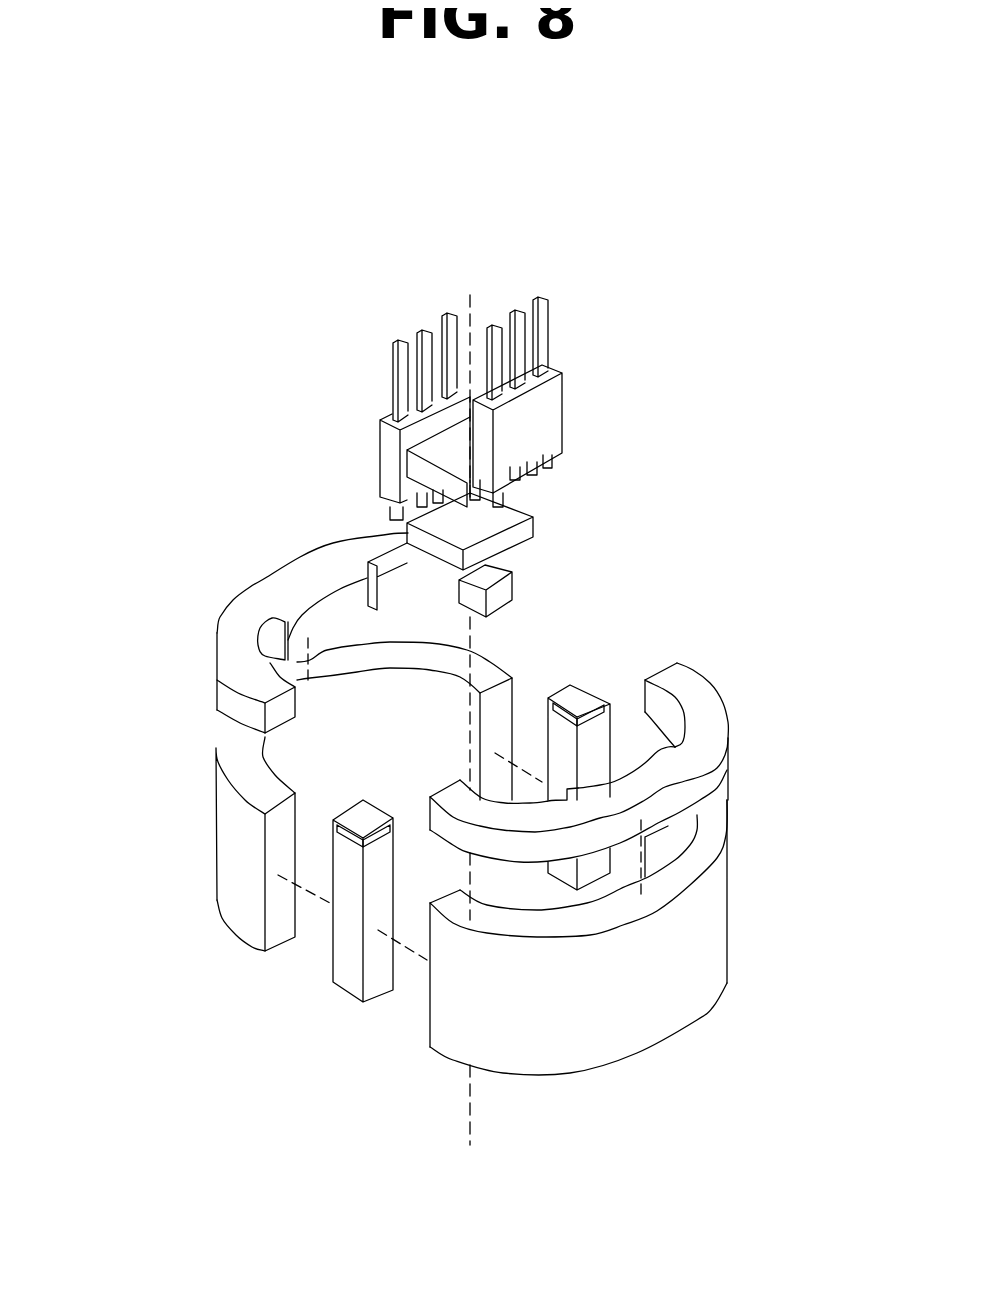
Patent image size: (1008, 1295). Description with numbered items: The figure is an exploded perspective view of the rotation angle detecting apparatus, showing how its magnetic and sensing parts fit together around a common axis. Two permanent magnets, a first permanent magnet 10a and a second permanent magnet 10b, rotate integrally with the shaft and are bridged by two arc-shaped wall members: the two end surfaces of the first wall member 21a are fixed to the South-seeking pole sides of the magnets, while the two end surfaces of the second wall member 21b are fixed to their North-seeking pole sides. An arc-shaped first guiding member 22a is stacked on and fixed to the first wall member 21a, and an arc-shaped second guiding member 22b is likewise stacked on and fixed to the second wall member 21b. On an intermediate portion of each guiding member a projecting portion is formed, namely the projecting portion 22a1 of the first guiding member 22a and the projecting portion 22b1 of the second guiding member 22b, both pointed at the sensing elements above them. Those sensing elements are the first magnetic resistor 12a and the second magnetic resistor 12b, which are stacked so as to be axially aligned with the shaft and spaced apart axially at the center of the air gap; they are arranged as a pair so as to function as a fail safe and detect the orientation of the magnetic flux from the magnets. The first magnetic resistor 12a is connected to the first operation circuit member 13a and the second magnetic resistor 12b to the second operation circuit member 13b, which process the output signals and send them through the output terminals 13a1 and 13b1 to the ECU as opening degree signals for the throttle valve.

The first permanent magnet 10a is at (353, 963).
The second permanent magnet 10b is at (580, 697).
The first magnetic resistor 12a is at (438, 462).
The second magnetic resistor 12b is at (533, 528).
The first operation circuit member 13a is at (533, 438).
The output terminal 13a1 is at (553, 322).
The second operation circuit member 13b is at (388, 444).
The output terminal 13b1 is at (412, 338).
The first wall member 21a is at (677, 978).
The second wall member 21b is at (238, 863).
The first guiding member 22a is at (700, 685).
The projecting portion 22a1 is at (645, 768).
The second guiding member 22b is at (245, 670).
The projecting portion 22b1 is at (323, 608).